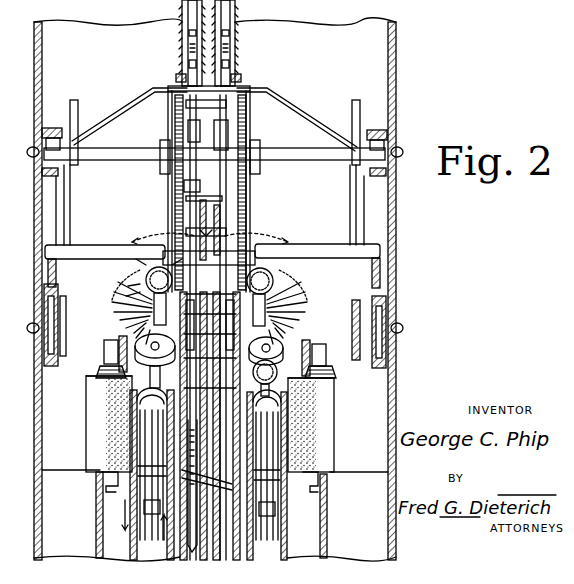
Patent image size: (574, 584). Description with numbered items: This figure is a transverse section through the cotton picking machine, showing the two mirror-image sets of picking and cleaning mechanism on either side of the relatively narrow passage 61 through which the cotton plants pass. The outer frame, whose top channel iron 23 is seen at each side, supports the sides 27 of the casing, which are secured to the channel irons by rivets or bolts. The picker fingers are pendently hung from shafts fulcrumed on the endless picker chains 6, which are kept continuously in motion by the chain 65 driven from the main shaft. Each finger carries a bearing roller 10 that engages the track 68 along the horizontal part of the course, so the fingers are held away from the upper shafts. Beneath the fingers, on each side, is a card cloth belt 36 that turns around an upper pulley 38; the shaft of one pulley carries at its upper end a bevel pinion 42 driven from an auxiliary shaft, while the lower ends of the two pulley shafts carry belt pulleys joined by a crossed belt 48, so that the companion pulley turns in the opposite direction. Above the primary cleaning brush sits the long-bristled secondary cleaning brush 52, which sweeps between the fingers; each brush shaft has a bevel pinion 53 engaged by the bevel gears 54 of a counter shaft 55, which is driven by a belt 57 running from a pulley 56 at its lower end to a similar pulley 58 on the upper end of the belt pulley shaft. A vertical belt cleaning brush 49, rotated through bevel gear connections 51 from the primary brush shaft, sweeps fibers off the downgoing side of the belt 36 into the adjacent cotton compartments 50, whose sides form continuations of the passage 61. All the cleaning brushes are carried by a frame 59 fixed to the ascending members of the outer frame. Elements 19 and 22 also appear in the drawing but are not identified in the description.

The endless picker chains 6 is at (172, 232).
The bearing roller 10 is at (244, 76).
The horizontal shaft 19 is at (73, 153).
The side rods 22 is at (70, 200).
The top channel iron 23 is at (214, 143).
The sides of the casing 27 is at (34, 200).
The belt 36 is at (195, 474).
The upper pulley 38 is at (210, 424).
The bevel pinion 42 is at (308, 348).
The crossed belt 48 is at (238, 488).
The belt cleaning brush 49 is at (86, 414).
The cotton compartments 50 is at (56, 478).
The bevel gear connections 51 is at (216, 359).
The secondary cleaning brush 52 is at (128, 286).
The bevel pinion 53 is at (126, 296).
The bevel gears 54 is at (148, 272).
The counter shaft 55 is at (122, 304).
The pulley 56 is at (136, 328).
The belt 57 is at (152, 312).
The pulley 58 is at (136, 342).
The frame 59 is at (100, 232).
The passage 61 is at (104, 494).
The chain 65 is at (250, 224).
The track 68 is at (160, 88).